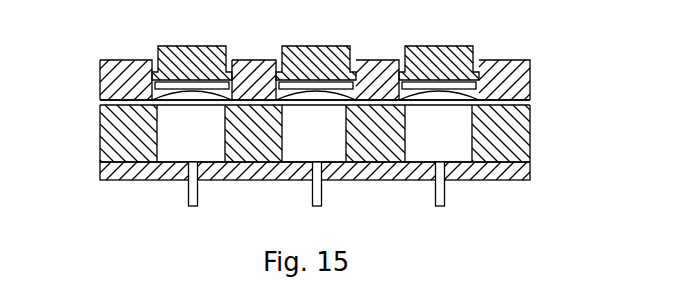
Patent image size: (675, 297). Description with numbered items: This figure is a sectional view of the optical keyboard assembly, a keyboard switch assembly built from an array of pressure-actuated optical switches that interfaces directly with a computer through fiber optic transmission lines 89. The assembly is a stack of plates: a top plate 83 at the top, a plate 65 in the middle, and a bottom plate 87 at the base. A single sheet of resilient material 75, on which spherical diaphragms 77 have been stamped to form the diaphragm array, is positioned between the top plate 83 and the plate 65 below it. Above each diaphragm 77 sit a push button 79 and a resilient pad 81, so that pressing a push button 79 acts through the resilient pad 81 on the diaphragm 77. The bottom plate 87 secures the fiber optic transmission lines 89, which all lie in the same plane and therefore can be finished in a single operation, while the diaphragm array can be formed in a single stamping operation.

The top plate 83 is at (118, 72).
The spherical diaphragms 77 is at (263, 65).
The push buttons 79 is at (470, 43).
The resilient pads 81 is at (415, 82).
The sheet of resilient material 75 is at (530, 103).
The intermediate plate 65 is at (112, 122).
The bottom plate 87 is at (100, 168).
The fiber optic transmission lines 89 is at (435, 192).